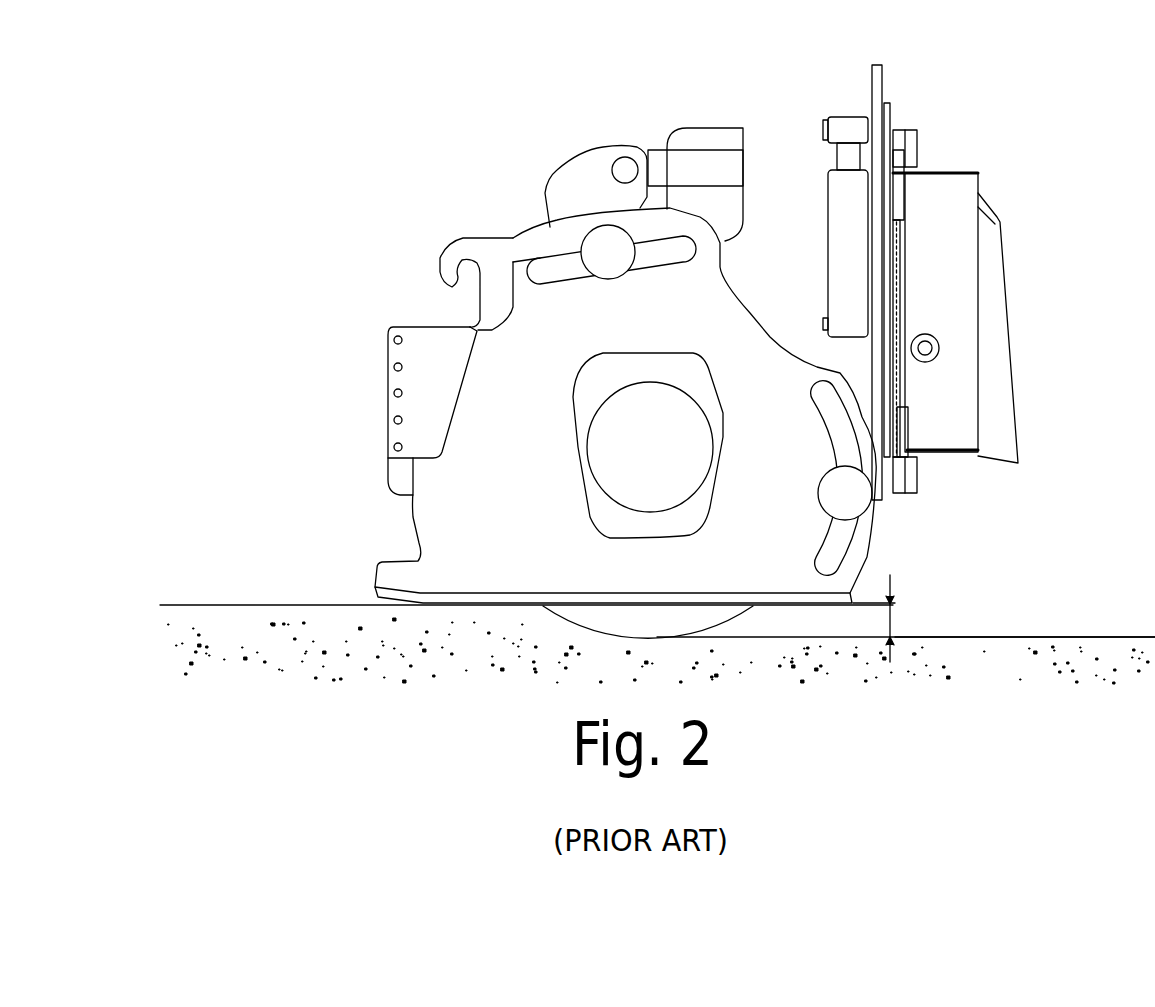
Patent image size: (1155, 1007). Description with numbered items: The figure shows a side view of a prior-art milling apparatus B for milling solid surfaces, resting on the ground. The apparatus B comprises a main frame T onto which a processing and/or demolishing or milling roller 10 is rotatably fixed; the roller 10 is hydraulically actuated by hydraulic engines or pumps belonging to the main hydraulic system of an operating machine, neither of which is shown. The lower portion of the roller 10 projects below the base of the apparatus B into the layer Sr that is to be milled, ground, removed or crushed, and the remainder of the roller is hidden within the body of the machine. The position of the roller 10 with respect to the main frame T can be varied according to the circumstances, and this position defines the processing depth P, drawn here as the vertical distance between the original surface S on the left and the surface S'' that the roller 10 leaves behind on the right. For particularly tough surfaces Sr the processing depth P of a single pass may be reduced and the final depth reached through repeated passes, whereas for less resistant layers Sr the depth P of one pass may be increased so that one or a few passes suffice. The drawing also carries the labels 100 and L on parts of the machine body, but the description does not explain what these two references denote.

The apparatus B is at (323, 178).
The actuator assembly 100 is at (762, 148).
The main frame T is at (980, 175).
The machine body support leg L is at (448, 521).
The original surface S is at (526, 531).
The surface defined by the processing means S'' is at (906, 698).
The layer to be milled Sr is at (910, 647).
The processing depth P is at (900, 618).
The processing roller 10 is at (580, 624).